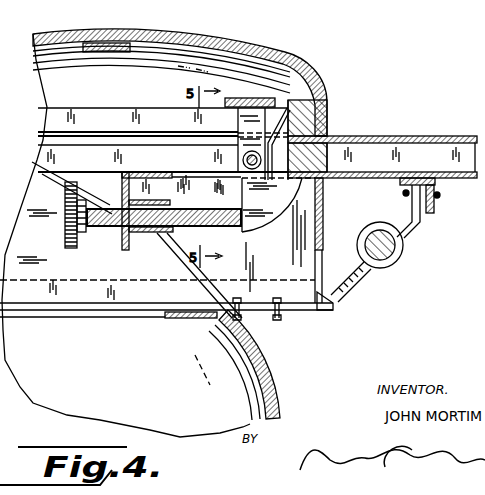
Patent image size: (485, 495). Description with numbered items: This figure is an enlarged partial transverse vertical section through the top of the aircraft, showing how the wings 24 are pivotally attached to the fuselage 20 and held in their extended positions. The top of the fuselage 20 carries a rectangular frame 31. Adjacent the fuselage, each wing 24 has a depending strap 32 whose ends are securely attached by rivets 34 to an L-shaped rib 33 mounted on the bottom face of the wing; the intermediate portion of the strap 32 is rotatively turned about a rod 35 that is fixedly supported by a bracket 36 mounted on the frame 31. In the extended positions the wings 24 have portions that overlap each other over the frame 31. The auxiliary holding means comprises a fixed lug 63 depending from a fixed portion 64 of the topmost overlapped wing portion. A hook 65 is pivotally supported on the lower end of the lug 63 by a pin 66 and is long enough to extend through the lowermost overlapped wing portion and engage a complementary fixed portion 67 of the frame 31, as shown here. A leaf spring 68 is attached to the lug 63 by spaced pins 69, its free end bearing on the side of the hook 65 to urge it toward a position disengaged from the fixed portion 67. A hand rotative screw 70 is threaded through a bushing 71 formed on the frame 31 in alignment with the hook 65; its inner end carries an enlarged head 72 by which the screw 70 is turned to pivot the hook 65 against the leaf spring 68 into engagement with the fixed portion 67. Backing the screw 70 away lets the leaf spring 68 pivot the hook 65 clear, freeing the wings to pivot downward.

The fuselage 20 is at (262, 382).
The wings 24 is at (446, 136).
The rectangular frame 31 is at (344, 301).
The depending straps 32 is at (422, 232).
The L-shaped ribs 33 is at (436, 189).
The rivets 34 is at (439, 197).
The rods 35 is at (384, 258).
The brackets 36 is at (322, 292).
The fixed lugs 63 is at (246, 118).
The fixed portion 64 is at (251, 101).
The hooks 65 is at (269, 233).
The pins 66 is at (243, 158).
The fixed portion 67 is at (323, 220).
The leaf springs 68 is at (291, 140).
The spaced pins 69 is at (286, 115).
The hand rotative screws 70 is at (207, 228).
The bushings 71 is at (133, 233).
The enlarged heads 72 is at (66, 237).